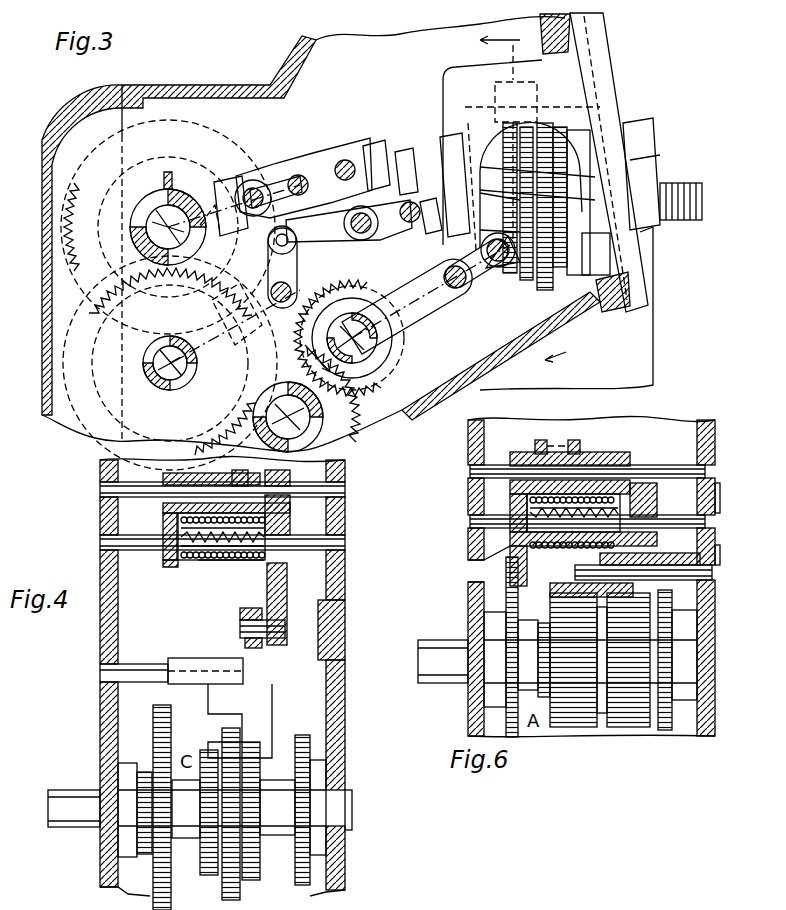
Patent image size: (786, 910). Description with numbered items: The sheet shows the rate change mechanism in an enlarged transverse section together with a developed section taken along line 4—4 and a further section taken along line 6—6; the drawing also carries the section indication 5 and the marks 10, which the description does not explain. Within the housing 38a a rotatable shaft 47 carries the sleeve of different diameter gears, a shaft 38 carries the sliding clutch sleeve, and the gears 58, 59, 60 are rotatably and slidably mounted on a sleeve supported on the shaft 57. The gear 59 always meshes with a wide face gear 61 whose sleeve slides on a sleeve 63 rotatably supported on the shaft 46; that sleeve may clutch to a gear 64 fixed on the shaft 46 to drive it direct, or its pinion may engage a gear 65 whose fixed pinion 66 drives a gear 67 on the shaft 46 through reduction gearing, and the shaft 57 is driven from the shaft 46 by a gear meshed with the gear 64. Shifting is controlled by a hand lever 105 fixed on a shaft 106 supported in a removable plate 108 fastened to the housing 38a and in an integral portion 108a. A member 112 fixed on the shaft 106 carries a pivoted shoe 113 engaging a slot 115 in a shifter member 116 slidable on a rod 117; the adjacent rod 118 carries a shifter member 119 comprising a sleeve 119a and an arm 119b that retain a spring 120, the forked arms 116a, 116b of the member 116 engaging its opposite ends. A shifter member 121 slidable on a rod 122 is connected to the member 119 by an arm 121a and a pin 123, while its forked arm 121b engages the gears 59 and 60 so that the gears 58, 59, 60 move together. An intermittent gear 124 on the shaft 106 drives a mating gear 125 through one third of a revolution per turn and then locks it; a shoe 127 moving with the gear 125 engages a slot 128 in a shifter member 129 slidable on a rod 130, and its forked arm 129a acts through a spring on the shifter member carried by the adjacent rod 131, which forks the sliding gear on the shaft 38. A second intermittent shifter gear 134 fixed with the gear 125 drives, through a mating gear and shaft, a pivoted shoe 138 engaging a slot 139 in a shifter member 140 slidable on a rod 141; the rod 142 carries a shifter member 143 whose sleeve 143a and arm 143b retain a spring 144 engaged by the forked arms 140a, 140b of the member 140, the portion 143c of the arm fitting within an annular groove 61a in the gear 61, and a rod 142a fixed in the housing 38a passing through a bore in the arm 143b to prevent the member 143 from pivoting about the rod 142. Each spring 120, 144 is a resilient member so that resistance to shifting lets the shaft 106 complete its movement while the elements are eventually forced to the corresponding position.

In FIG. 3, the section line 4 is at (114, 427).
In FIG. 3, the section line 5 is at (313, 349).
In FIG. 3, the section line 6 is at (125, 258).
In FIG. 3, the direction arrow 10 is at (536, 194).
In FIG. 3, the shaft 38 is at (378, 340).
In FIG. 3, the housing 38a is at (306, 70).
In FIG. 4, the housing 38a is at (102, 718).
In FIG. 6, the housing 38a is at (480, 542).
In FIG. 3, the shaft 46 is at (138, 212).
In FIG. 6, the shaft 46 is at (430, 683).
In FIG. 3, the rotatable shaft 47 is at (318, 425).
In FIG. 3, the shaft 57 is at (180, 375).
In FIG. 4, the shaft 57 is at (80, 828).
In FIG. 4, the gear 58 is at (212, 875).
In FIG. 4, the gear 59 is at (236, 892).
In FIG. 4, the gear 60 is at (258, 872).
In FIG. 6, the wide face gear 61 is at (570, 727).
In FIG. 6, the annular groove 61a is at (602, 727).
In FIG. 4, the sleeve 63 is at (310, 762).
In FIG. 6, the gear 64 is at (666, 730).
In FIG. 4, the gear 65 is at (175, 807).
In FIG. 4, the pinion 66 is at (144, 855).
In FIG. 6, the gear 67 is at (508, 714).
In FIG. 3, the hand lever 105 is at (660, 180).
In FIG. 3, the shaft 106 is at (652, 136).
In FIG. 3, the removable plate or cover 108 is at (590, 40).
In FIG. 3, the portion 108a is at (448, 92).
In FIG. 3, the member 112 is at (470, 128).
In FIG. 3, the shoe 113 is at (442, 135).
In FIG. 4, the slot 115 is at (272, 480).
In FIG. 3, the shifter member 116 is at (402, 150).
In FIG. 4, the shifter member 116 is at (200, 474).
In FIG. 3, the forked arm 116a is at (404, 222).
In FIG. 4, the forked arm 116a is at (283, 522).
In FIG. 4, the forked arm 116b is at (165, 515).
In FIG. 3, the rod 117 is at (430, 236).
In FIG. 4, the rod 117 is at (100, 492).
In FIG. 3, the rod 118 is at (358, 234).
In FIG. 4, the rod 118 is at (345, 540).
In FIG. 3, the shifter member 119 is at (296, 248).
In FIG. 4, the shifter member 119 is at (221, 554).
In FIG. 4, the sleeve 119a is at (175, 567).
In FIG. 4, the arm 119b is at (287, 586).
In FIG. 4, the spring 120 is at (244, 562).
In FIG. 3, the shifter member 121 is at (252, 290).
In FIG. 4, the shifter member 121 is at (205, 660).
In FIG. 4, the arm 121a is at (244, 640).
In FIG. 4, the arm 121b is at (258, 722).
In FIG. 3, the rod 122 is at (292, 292).
In FIG. 4, the rod 122 is at (138, 660).
In FIG. 3, the pin 123 is at (296, 240).
In FIG. 4, the pin 123 is at (285, 628).
In FIG. 3, the intermittent or mutilated gear 124 is at (516, 100).
In FIG. 3, the mating gear 125 is at (538, 205).
In FIG. 3, the shoe 127 is at (538, 288).
In FIG. 4, the slot 128 is at (195, 902).
In FIG. 3, the shifter member 129 is at (504, 272).
In FIG. 4, the shifter member 129 is at (297, 902).
In FIG. 3, the forked arm 129a is at (486, 300).
In FIG. 3, the rod 130 is at (498, 238).
In FIG. 3, the rod 131 is at (446, 282).
In FIG. 3, the intermittent or mutilated shifter gear 134 is at (590, 276).
In FIG. 3, the shoe 138 is at (372, 142).
In FIG. 6, the slot 139 is at (554, 452).
In FIG. 3, the shifter member 140 is at (312, 158).
In FIG. 6, the shifter member 140 is at (522, 460).
In FIG. 3, the forked arm 140a is at (349, 221).
In FIG. 6, the forked arm 140a is at (634, 494).
In FIG. 6, the forked arm 140b is at (502, 508).
In FIG. 3, the rod 141 is at (340, 160).
In FIG. 6, the rod 141 is at (470, 474).
In FIG. 3, the rod 142 is at (296, 175).
In FIG. 6, the rod 142 is at (470, 523).
In FIG. 3, the rod 142a is at (252, 188).
In FIG. 6, the rod 142a is at (669, 571).
In FIG. 3, the shifter member 143 is at (240, 175).
In FIG. 6, the shifter member 143 is at (532, 566).
In FIG. 6, the sleeve 143a is at (510, 550).
In FIG. 6, the arm 143b is at (650, 555).
In FIG. 3, the portion 143c is at (216, 195).
In FIG. 6, the portion 143c is at (575, 586).
In FIG. 6, the spring 144 is at (572, 548).